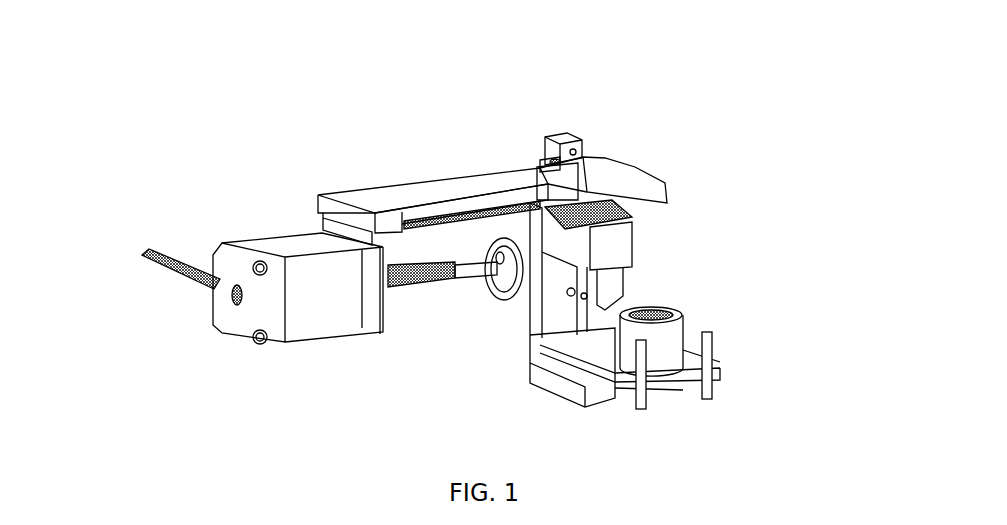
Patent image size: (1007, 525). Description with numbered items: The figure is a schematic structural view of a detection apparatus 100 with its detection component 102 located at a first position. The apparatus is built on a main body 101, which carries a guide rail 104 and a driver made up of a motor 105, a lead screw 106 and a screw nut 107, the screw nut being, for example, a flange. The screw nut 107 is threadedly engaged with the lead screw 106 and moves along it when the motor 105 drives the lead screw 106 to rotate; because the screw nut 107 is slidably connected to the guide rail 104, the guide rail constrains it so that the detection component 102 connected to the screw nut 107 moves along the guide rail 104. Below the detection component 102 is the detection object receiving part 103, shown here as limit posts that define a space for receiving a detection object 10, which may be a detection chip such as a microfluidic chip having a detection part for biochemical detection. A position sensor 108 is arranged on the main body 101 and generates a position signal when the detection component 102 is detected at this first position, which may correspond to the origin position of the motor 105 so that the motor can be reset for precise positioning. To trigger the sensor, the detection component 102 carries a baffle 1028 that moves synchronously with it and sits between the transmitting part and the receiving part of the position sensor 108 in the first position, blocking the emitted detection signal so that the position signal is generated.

The detection apparatus 100 is at (476, 24).
The main body 101 is at (630, 180).
The baffle 1028 is at (550, 165).
The position sensor 108 is at (568, 138).
The motor 105 is at (293, 305).
The guide rail 104 is at (440, 225).
The lead screw 106 is at (467, 272).
The screw nut 107 is at (502, 288).
The detection component 102 is at (575, 390).
The detection object receiving part 103 is at (713, 333).
The detection object 10 is at (652, 375).